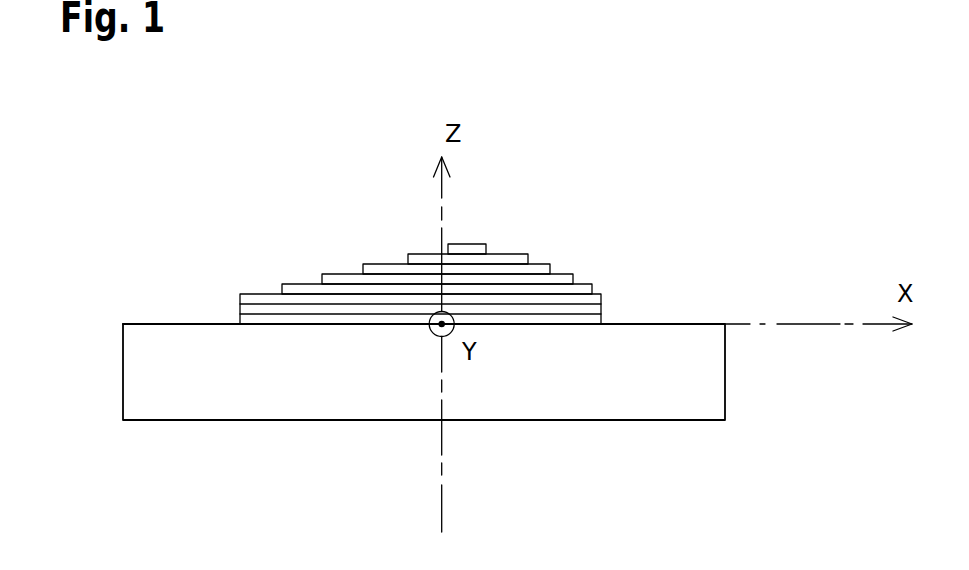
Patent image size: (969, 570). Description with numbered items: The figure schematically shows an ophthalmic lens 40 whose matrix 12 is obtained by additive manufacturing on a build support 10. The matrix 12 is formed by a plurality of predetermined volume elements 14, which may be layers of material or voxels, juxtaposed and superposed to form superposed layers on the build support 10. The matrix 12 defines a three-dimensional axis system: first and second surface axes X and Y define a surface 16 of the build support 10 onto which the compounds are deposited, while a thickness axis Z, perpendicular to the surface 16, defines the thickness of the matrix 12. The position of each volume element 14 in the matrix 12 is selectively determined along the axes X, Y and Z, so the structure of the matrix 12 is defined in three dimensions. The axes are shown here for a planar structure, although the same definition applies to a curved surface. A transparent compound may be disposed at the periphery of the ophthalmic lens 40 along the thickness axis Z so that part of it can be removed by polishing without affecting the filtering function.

The build support 10 is at (685, 372).
The matrix 12 is at (473, 227).
The predetermined volume elements 14 is at (550, 238).
The surface of the build support 16 is at (177, 323).
The ophthalmic lens 40 is at (452, 230).